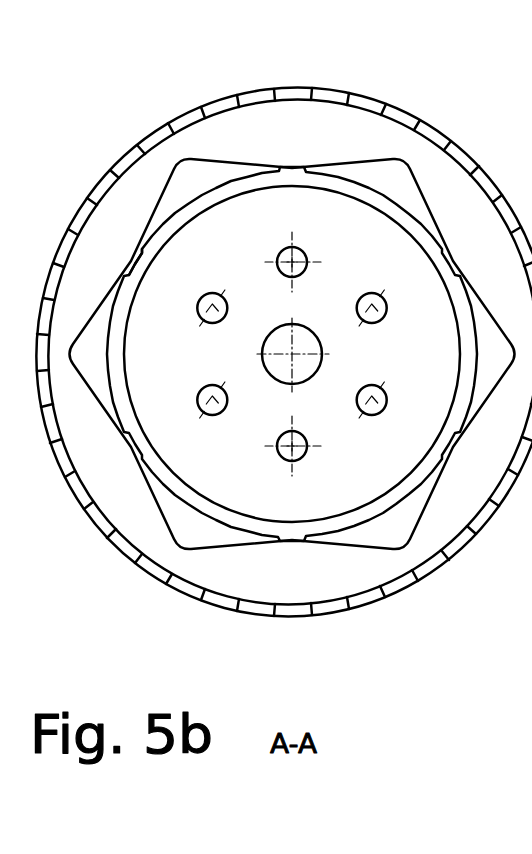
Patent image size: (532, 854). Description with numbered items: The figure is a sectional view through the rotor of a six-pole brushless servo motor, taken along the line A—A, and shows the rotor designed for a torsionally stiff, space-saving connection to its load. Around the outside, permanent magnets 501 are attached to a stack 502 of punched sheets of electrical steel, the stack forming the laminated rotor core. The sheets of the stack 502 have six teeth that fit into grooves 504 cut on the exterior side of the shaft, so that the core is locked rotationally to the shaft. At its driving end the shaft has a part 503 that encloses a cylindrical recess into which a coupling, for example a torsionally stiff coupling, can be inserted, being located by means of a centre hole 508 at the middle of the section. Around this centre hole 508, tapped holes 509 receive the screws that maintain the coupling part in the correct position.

The permanent magnets 501 is at (114, 164).
The stack of punched sheets of electrical steel 502 is at (294, 152).
The shaft part enclosing cylindrical recess 503 is at (194, 207).
The grooves 504 is at (141, 447).
The centre hole 508 is at (311, 344).
The tapped holes 509 is at (303, 461).